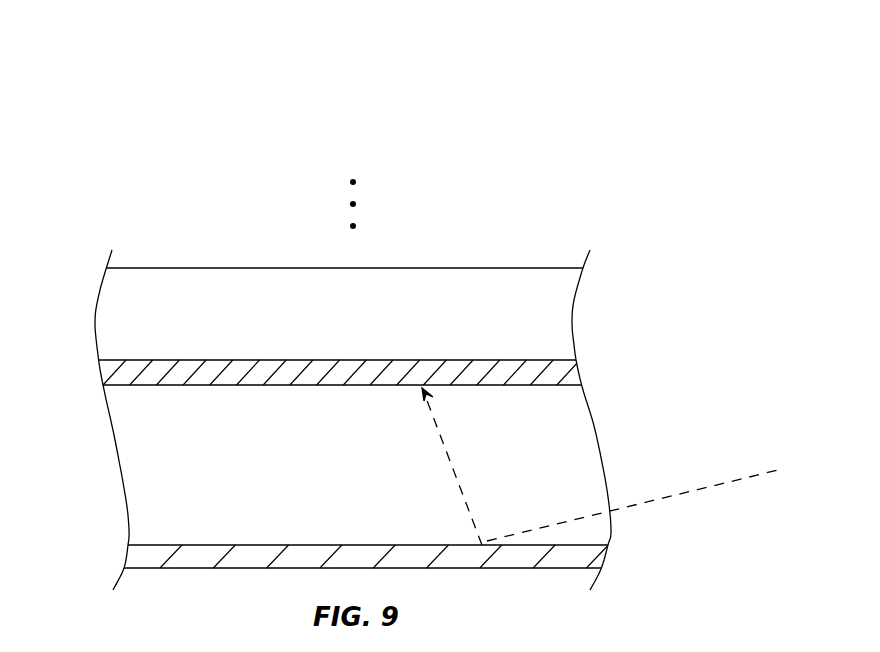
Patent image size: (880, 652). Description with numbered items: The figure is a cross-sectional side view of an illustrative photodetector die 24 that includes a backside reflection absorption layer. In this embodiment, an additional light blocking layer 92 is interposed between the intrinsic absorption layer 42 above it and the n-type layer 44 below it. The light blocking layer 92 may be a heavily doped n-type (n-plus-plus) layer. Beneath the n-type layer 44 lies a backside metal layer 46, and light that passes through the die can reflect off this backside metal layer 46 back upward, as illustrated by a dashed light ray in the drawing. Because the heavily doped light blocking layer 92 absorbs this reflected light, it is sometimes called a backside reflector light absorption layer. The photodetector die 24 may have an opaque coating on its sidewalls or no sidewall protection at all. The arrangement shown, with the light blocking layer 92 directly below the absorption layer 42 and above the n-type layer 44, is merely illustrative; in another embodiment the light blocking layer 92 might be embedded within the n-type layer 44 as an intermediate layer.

The photodetector die 24 is at (578, 70).
The intrinsic absorption layer 42 is at (107, 320).
The n-type layer 44 is at (128, 468).
The backside metal layer 46 is at (131, 556).
The light blocking layer 92 is at (574, 373).